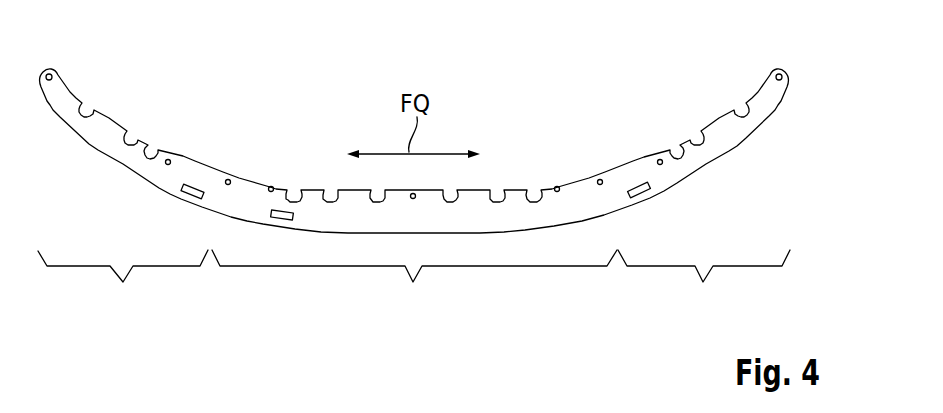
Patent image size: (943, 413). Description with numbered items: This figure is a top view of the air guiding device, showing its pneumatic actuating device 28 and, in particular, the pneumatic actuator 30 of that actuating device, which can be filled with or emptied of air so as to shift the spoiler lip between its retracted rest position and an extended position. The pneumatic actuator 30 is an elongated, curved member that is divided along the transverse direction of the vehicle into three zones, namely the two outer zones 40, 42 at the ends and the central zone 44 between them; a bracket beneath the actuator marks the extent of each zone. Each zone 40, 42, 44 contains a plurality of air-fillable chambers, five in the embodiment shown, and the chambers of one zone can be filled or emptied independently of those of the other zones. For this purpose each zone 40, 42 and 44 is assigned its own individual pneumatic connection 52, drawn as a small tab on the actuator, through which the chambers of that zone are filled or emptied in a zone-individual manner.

The pneumatic actuating device 28 is at (414, 120).
The pneumatic actuator 30 is at (663, 77).
The pneumatic connection 52 is at (194, 185).
The outer zone 40 is at (123, 283).
The outer zone 42 is at (704, 283).
The central zone 44 is at (414, 283).